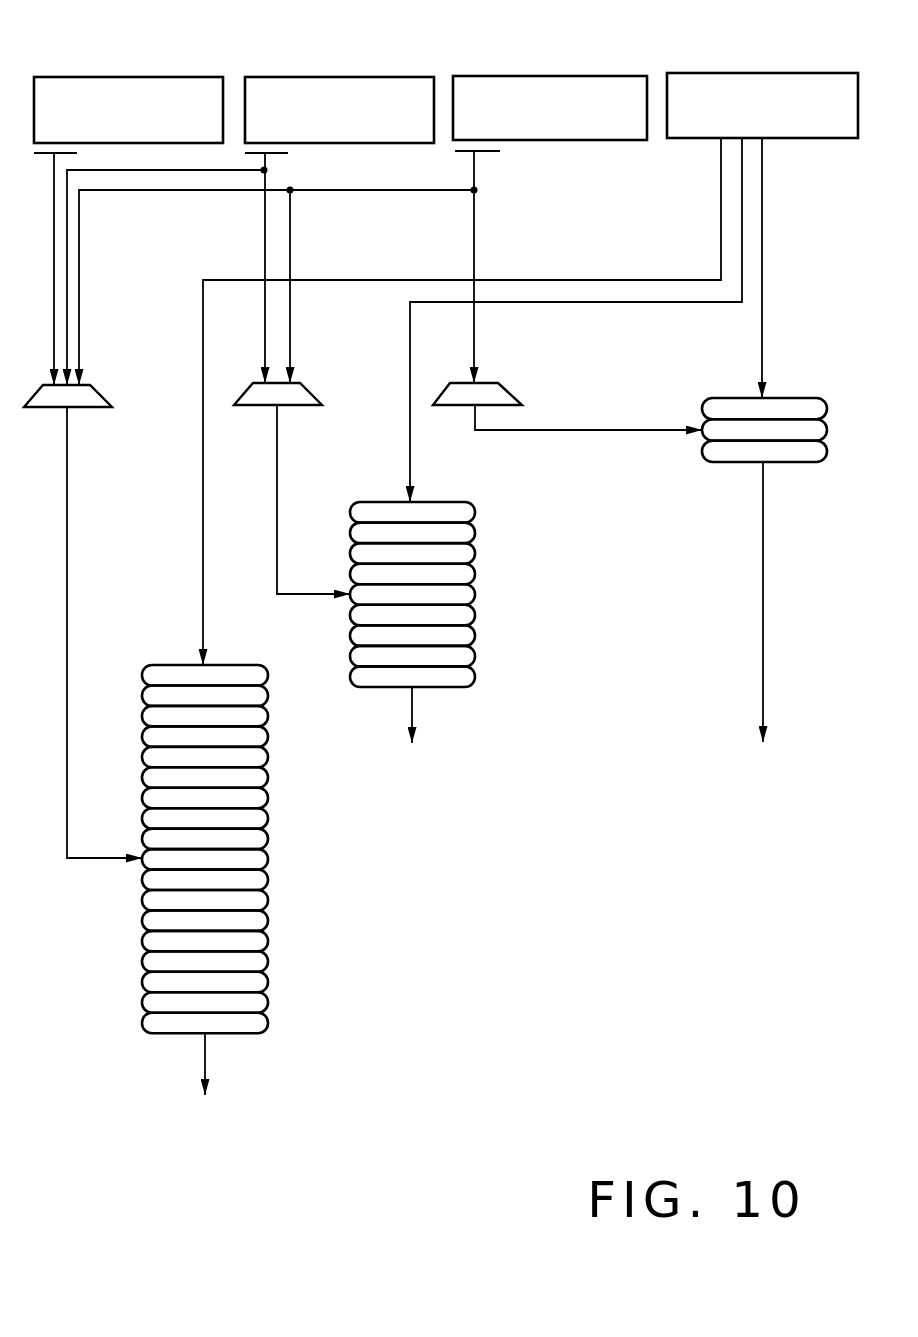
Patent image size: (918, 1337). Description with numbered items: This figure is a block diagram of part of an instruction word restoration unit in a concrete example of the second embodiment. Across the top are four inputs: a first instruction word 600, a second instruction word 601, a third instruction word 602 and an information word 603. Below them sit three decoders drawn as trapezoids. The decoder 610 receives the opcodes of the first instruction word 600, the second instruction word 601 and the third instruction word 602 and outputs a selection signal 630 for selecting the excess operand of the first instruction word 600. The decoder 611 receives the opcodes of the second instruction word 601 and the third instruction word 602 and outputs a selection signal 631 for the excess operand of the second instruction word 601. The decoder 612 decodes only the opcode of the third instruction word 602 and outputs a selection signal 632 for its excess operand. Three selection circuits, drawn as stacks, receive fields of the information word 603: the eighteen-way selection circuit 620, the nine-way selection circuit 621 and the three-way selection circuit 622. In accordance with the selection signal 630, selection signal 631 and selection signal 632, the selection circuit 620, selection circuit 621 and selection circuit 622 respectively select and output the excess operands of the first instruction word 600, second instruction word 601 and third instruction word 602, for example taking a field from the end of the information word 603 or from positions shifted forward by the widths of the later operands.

The first instruction word 600 is at (180, 77).
The second instruction word 601 is at (390, 76).
The third instruction word 602 is at (600, 75).
The information word 603 is at (808, 73).
The decoder 610 is at (100, 392).
The decoder 611 is at (310, 390).
The decoder 612 is at (510, 390).
The selection circuit 620 is at (232, 665).
The selection circuit 621 is at (440, 502).
The selection circuit 622 is at (790, 398).
The selection signal 630 is at (69, 543).
The selection signal 631 is at (277, 462).
The selection signal 632 is at (600, 430).